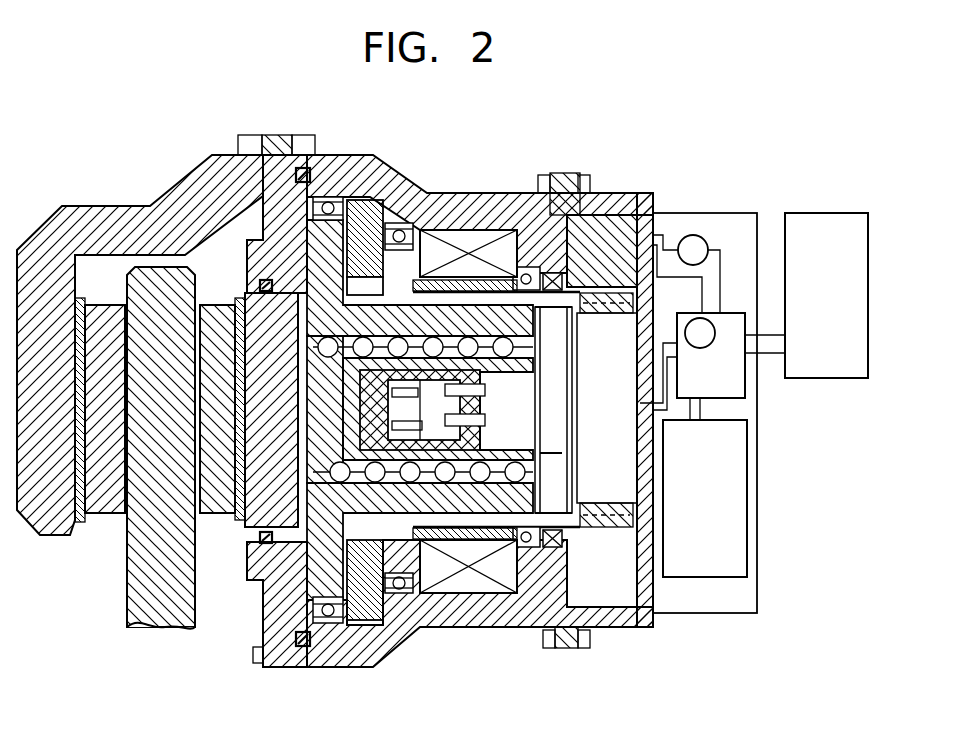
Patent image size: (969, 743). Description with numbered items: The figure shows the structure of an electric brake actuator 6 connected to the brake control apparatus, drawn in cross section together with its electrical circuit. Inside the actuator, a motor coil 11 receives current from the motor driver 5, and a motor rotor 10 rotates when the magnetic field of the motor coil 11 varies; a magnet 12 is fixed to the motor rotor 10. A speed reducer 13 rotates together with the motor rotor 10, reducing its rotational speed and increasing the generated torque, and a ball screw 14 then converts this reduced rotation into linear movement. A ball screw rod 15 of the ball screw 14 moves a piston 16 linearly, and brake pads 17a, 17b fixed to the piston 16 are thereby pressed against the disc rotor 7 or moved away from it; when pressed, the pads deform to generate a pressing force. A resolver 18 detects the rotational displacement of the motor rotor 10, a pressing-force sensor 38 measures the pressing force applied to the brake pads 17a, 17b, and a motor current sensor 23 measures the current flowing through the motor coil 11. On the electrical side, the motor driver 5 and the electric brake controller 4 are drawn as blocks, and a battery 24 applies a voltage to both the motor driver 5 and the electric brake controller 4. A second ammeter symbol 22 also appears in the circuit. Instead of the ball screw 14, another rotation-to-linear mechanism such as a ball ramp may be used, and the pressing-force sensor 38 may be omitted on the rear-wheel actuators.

The electric brake controller 4 is at (748, 465).
The motor driver 5 is at (747, 385).
The electric brake actuator 6 is at (63, 210).
The disc rotor 7 is at (157, 619).
The motor rotor 10 is at (413, 253).
The motor coil 11 is at (473, 230).
The magnet 12 is at (453, 539).
The speed reducer 13 is at (384, 226).
The ball screw 14 is at (317, 263).
The ball screw rod 15 is at (533, 453).
The piston 16 is at (253, 495).
The brake pad 17a is at (100, 305).
The brake pad 17b is at (217, 303).
The resolver 18 is at (563, 540).
The ammeter 22 is at (707, 236).
The motor current sensor 23 is at (700, 348).
The battery 24 is at (830, 213).
The pressing-force sensor 38 is at (473, 447).